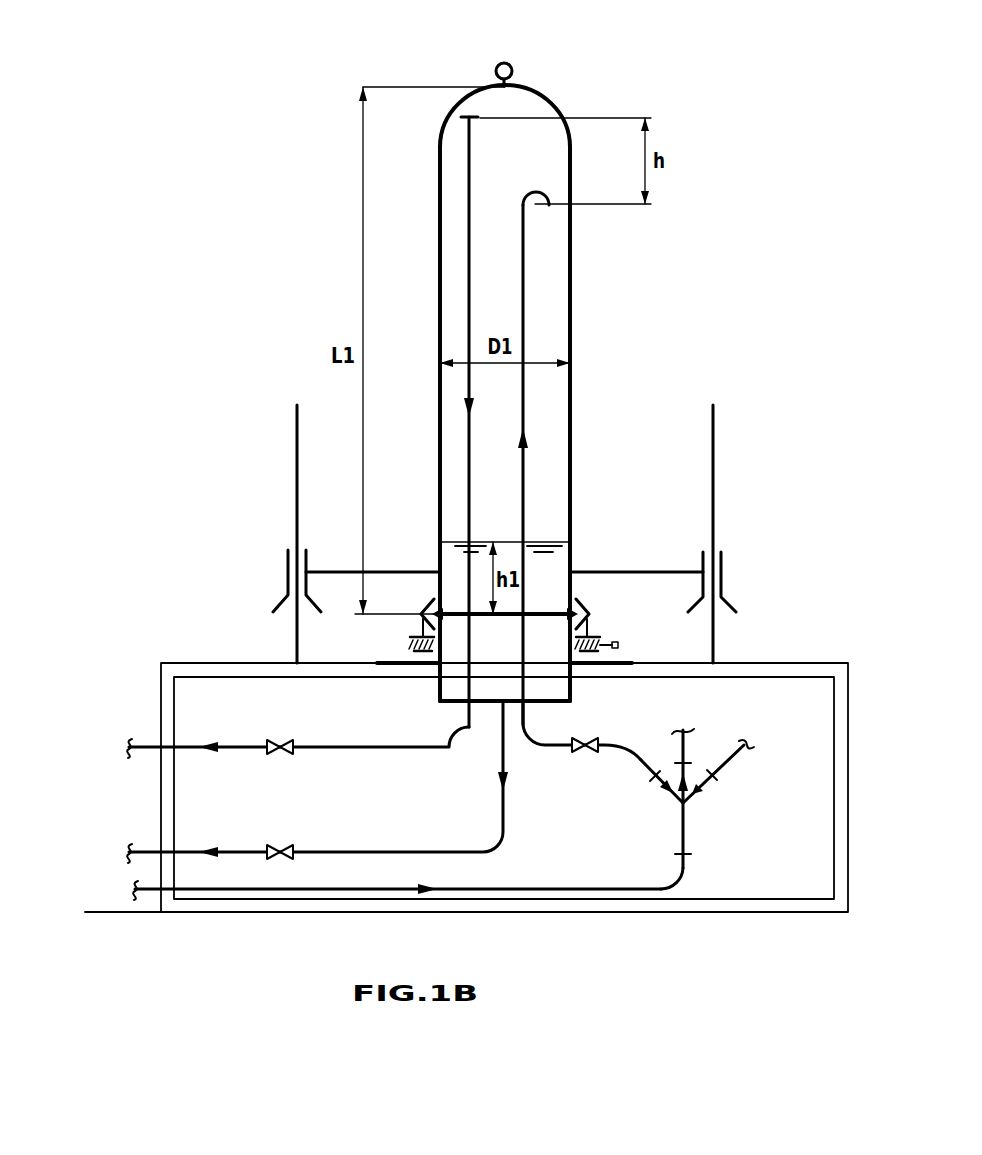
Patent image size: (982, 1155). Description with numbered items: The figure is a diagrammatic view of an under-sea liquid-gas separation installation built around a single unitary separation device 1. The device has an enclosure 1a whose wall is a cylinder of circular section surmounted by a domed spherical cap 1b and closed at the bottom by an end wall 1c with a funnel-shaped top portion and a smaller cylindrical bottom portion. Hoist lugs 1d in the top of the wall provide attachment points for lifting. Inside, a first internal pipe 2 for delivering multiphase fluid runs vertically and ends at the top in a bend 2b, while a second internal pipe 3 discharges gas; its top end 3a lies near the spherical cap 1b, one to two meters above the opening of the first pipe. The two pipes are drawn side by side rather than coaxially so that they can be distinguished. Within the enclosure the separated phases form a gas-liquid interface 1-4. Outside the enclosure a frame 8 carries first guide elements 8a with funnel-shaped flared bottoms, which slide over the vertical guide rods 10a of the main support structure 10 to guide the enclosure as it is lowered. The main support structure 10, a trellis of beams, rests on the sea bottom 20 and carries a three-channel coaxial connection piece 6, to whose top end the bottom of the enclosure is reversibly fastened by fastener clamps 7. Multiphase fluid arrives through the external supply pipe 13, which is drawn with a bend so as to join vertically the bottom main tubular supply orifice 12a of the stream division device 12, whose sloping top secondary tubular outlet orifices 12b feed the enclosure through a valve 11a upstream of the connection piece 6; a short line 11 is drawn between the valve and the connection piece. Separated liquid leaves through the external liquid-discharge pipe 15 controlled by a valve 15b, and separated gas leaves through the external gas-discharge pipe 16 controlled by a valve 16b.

The unitary separation device 1 is at (624, 273).
The enclosure 1a is at (571, 310).
The spherical cap 1b is at (532, 92).
The end wall 1c is at (537, 612).
The hoist lugs 1d is at (508, 63).
The gas-liquid interface 1-4 is at (546, 541).
The first internal pipe 2 is at (523, 262).
The bend 2b is at (547, 197).
The second internal pipe 3 is at (469, 258).
The top end of second internal pipe 3a is at (462, 118).
The three-channel coaxial connection piece 6 is at (452, 691).
The fastener clamps 7 is at (428, 606).
The frame 8 is at (650, 571).
The first guide elements 8a is at (288, 568).
The main support structure 10 is at (204, 663).
The vertical guide rods 10a is at (297, 646).
The outlet pipe 11 is at (548, 748).
The valve 11a is at (583, 752).
The stream division device 12 is at (690, 806).
The bottom main tubular supply orifice 12a is at (678, 822).
The top secondary tubular outlet orifices 12b is at (658, 782).
The external multiphase fluid supply pipe 13 is at (690, 878).
The external liquid-discharge pipe 15 is at (365, 851).
The valve 15b is at (281, 845).
The external gas-discharge pipe 16 is at (372, 750).
The valve 16b is at (281, 756).
The sea bottom 20 is at (110, 910).